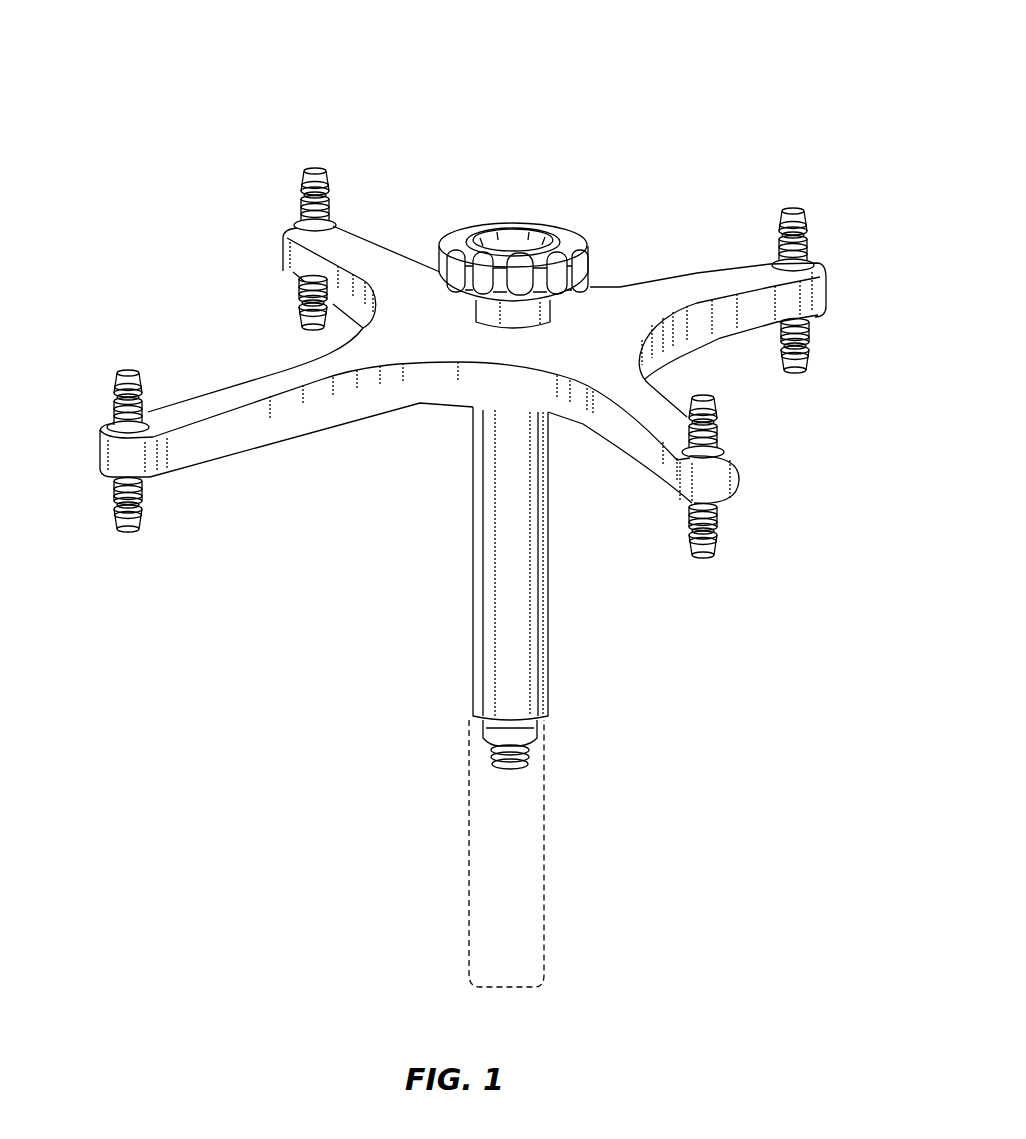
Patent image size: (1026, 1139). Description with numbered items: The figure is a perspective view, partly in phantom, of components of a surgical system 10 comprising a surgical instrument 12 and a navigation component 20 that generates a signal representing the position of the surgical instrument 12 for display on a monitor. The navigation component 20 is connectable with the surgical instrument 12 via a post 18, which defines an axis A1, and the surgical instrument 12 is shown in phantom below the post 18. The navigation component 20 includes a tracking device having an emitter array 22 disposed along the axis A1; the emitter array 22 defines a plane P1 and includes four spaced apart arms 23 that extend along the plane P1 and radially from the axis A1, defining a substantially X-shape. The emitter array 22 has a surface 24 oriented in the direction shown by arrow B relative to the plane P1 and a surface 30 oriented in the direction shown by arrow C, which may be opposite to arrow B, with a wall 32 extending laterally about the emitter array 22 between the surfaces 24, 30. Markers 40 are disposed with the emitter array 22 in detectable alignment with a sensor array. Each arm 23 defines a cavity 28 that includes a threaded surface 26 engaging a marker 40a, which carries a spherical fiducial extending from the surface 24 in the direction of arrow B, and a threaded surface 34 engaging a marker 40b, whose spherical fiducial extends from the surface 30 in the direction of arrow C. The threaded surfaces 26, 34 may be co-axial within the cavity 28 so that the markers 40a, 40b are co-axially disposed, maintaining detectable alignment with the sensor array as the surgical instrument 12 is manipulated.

The surgical system 10 is at (818, 85).
The surgical instrument 12 is at (405, 861).
The post 18 is at (552, 690).
The navigation component 20 is at (79, 108).
The emitter array 22 is at (201, 168).
The arms 23 is at (348, 234).
The surface 24 is at (622, 310).
The threaded surface 26 is at (733, 447).
The cavity 28 is at (732, 470).
The surface 30 is at (218, 455).
The wall 32 is at (290, 420).
The threaded surface 34 is at (687, 505).
The markers 40 is at (829, 230).
The marker 40a is at (106, 376).
The marker 40b is at (108, 513).
The axis A1 is at (513, 240).
The arrow B is at (410, 305).
The arrow C is at (410, 365).
The plane P1 is at (683, 383).